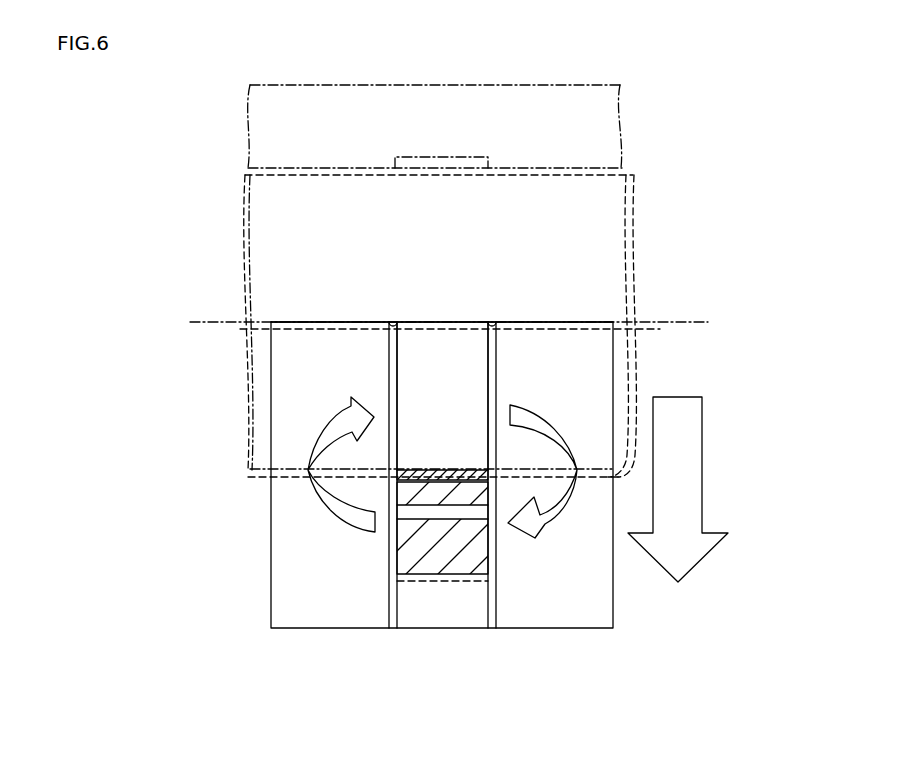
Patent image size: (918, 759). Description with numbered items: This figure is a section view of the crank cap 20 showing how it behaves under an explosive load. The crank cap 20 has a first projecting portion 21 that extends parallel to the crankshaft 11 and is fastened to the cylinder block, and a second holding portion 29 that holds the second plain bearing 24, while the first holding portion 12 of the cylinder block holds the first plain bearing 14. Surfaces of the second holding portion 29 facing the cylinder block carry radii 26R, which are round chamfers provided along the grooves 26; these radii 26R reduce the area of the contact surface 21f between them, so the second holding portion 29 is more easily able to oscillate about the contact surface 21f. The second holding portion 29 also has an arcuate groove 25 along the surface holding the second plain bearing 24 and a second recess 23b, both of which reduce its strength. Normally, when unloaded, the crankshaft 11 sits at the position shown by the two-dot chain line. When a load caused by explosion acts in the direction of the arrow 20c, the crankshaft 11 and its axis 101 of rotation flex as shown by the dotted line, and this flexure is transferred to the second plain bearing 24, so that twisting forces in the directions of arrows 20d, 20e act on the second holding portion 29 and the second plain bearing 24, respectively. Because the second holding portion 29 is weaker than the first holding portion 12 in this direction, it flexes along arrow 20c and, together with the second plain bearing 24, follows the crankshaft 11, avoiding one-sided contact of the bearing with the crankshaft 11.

The crankshaft 11 is at (608, 205).
The first holding portion 12 is at (608, 127).
The first plain bearing 14 is at (460, 164).
The axis of rotation of the crankshaft 101 is at (676, 322).
The crank cap 20 is at (272, 667).
The arrow indicating load direction 20c is at (690, 500).
The arrow indicating twisting force direction 20d is at (357, 522).
The arrow indicating twisting force direction 20e is at (548, 513).
The first projecting portion 21 is at (283, 542).
The contact surface 21f is at (280, 321).
The second recess 23b is at (430, 573).
The second plain bearing 24 is at (425, 350).
The groove 25 is at (448, 512).
The groove 26 is at (389, 322).
The radius 26R is at (394, 322).
The second holding portion 29 is at (407, 581).